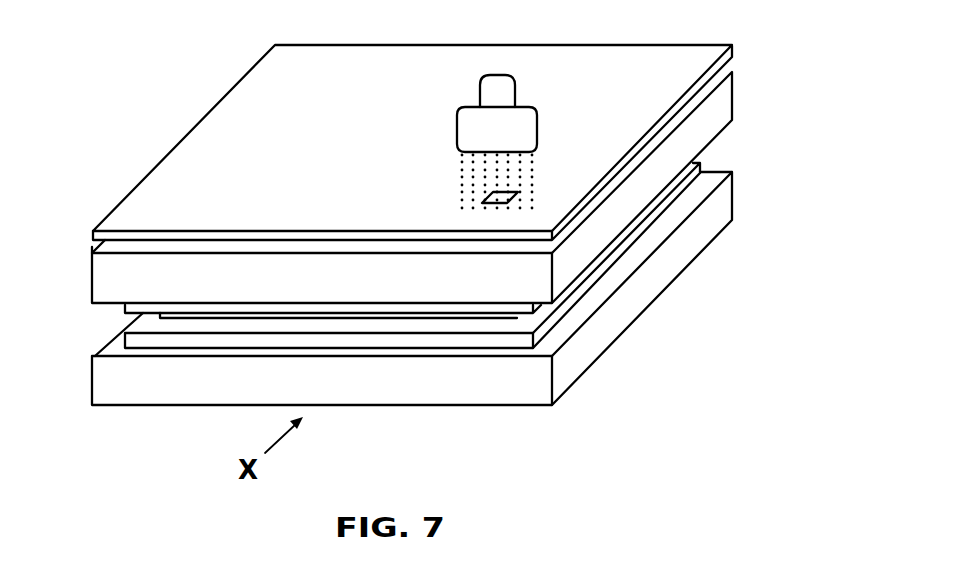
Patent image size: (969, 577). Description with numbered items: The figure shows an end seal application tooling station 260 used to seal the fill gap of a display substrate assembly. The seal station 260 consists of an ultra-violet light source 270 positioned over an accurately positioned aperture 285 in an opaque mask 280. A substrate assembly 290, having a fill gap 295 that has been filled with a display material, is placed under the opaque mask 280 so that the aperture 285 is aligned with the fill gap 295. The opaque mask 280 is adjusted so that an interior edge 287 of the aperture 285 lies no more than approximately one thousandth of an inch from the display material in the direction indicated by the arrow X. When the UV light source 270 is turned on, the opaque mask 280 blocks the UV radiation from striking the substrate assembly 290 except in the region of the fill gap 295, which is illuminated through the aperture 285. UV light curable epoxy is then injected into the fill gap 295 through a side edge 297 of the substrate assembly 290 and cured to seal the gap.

The end seal application tooling station 260 is at (412, 156).
The opaque mask 280 is at (160, 158).
The ultra-violet light source 270 is at (472, 108).
The interior edge 287 is at (507, 192).
The aperture 285 is at (517, 192).
The fill gap 295 is at (493, 318).
The side edge 297 is at (120, 357).
The substrate assembly 290 is at (197, 408).